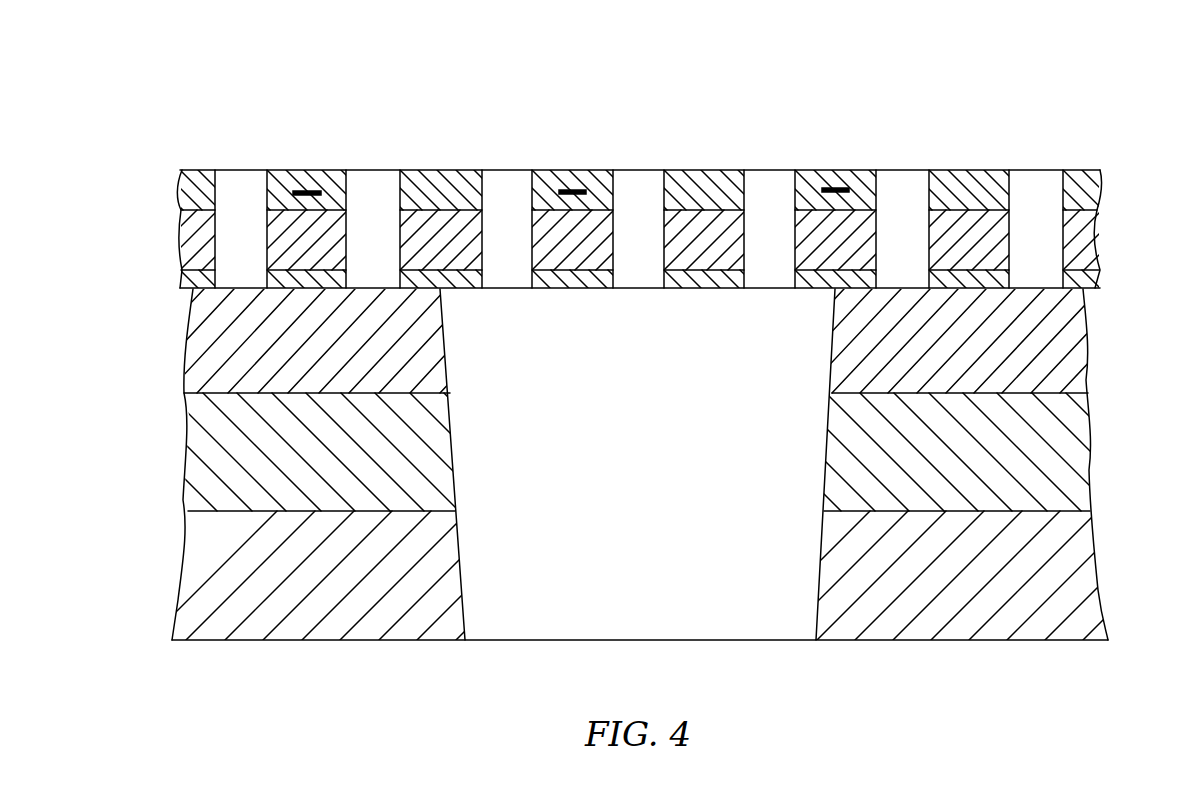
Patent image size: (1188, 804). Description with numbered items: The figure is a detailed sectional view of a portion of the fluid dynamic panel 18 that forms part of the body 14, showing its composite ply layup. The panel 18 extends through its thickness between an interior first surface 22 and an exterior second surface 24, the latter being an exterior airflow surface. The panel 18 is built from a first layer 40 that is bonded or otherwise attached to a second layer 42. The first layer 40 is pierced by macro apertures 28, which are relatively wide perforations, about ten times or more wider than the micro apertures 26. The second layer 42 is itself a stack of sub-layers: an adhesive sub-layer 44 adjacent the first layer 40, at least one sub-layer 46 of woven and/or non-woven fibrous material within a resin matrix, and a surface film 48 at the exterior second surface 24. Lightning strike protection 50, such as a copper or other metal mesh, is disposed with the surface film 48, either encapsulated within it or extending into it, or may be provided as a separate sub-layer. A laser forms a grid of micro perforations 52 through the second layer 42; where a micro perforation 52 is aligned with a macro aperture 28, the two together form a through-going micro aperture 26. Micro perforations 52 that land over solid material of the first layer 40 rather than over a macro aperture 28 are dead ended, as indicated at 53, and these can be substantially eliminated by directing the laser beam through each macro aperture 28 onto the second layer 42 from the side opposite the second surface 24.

The body 14 is at (1070, 111).
The fluid dynamic panel 18 is at (637, 200).
The interior first surface 22 is at (208, 642).
The exterior second surface 24 is at (201, 170).
The micro apertures 26 is at (512, 170).
The macro apertures 28 is at (622, 642).
The first layer 40 is at (151, 293).
The second layer 42 is at (151, 172).
The adhesive sub-layer 44 is at (1085, 277).
The sub-layer of fibrous material within a resin matrix 46 is at (1087, 230).
The surface film 48 is at (1090, 188).
The lightning strike protection 50 is at (310, 170).
The micro perforations 52 is at (245, 170).
The dead ended micro-perforation 53 is at (322, 197).